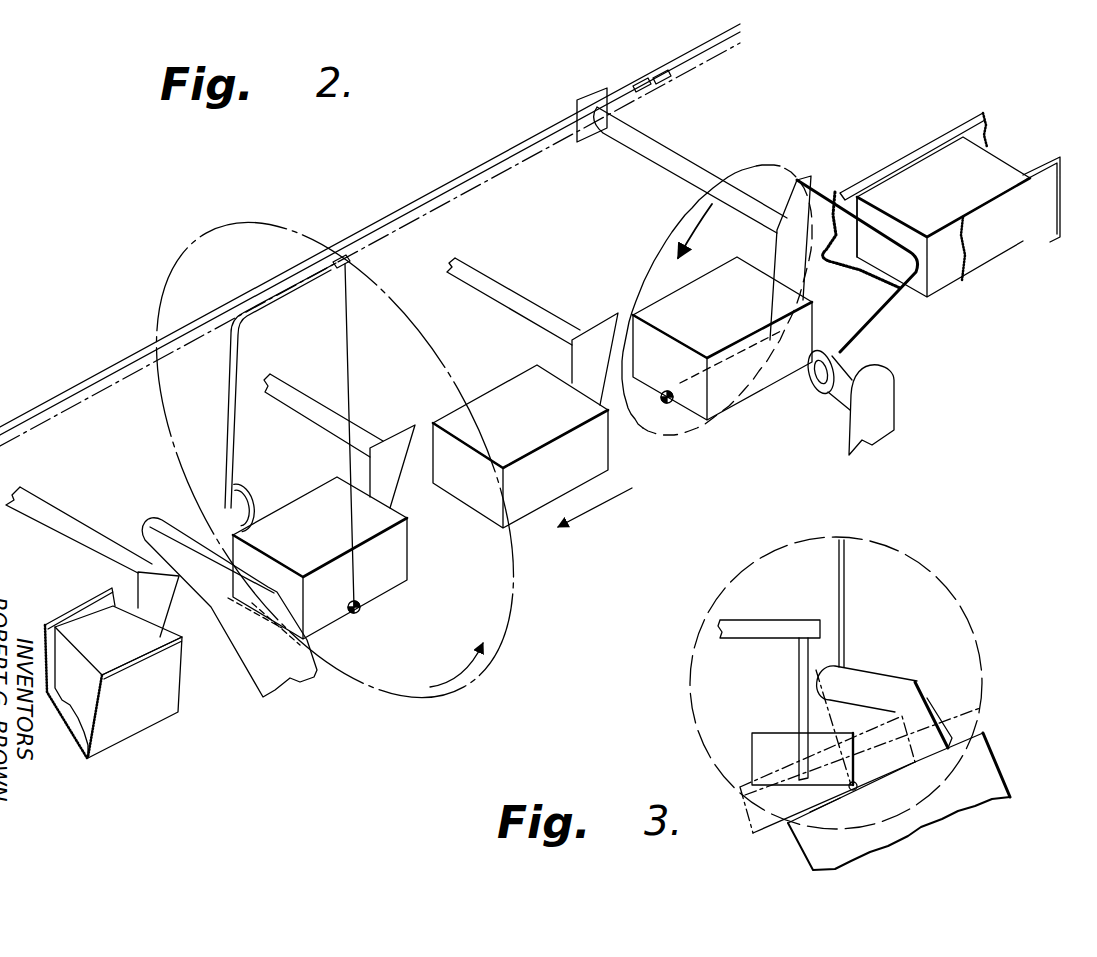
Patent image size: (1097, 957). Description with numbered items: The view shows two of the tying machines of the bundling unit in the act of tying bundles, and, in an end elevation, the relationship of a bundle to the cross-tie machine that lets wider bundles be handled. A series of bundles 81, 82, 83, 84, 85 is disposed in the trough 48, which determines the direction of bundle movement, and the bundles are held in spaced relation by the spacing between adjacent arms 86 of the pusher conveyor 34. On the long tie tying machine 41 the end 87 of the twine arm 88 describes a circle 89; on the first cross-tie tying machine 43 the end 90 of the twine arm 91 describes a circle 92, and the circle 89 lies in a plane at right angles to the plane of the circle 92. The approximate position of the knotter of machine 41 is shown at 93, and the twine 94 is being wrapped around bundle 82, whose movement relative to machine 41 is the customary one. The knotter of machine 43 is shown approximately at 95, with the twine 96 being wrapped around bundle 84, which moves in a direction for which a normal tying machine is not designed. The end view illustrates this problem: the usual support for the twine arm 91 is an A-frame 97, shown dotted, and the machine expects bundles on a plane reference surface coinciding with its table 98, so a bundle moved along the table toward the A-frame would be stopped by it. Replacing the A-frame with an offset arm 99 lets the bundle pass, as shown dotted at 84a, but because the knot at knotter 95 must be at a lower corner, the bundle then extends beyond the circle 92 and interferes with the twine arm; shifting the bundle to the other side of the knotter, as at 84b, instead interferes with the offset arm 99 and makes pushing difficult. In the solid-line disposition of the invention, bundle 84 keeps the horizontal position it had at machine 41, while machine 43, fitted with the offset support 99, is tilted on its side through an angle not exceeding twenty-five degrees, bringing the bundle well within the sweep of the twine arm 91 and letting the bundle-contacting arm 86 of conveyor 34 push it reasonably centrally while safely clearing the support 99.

In FIG. 2, the pusher conveyor 34 is at (679, 148).
In FIG. 3, the pusher conveyor 34 is at (768, 617).
In FIG. 2, the long tie tying machine 41 is at (900, 397).
In FIG. 2, the first cross-tie tying machine 43 is at (267, 663).
In FIG. 3, the first cross-tie tying machine 43 is at (1003, 762).
In FIG. 2, the trough 48 is at (54, 608).
In FIG. 2, the bundle 81 is at (983, 167).
In FIG. 2, the bundle 82 is at (668, 305).
In FIG. 2, the bundle 83 is at (502, 403).
In FIG. 2, the bundle 84 is at (297, 508).
In FIG. 3, the bundle 84 is at (768, 733).
In FIG. 3, the bundle position 84a is at (740, 797).
In FIG. 3, the bundle position 84b is at (985, 712).
In FIG. 2, the bundle 85 is at (83, 621).
In FIG. 2, the arm 86 is at (602, 328).
In FIG. 3, the arm 86 is at (797, 660).
In FIG. 2, the end of twine arm 87 is at (797, 178).
In FIG. 2, the twine arm 88 is at (870, 227).
In FIG. 2, the circle 89 is at (697, 213).
In FIG. 2, the end of twine arm 90 is at (355, 258).
In FIG. 2, the twine arm 91 is at (230, 357).
In FIG. 3, the twine arm 91 is at (847, 580).
In FIG. 2, the circle 92 is at (506, 590).
In FIG. 3, the circle 92 is at (923, 562).
In FIG. 2, the knotter 93 is at (667, 404).
In FIG. 2, the twine 94 is at (777, 261).
In FIG. 2, the knotter 95 is at (357, 613).
In FIG. 3, the knotter 95 is at (857, 788).
In FIG. 2, the twine 96 is at (347, 383).
In FIG. 3, the A-frame 97 is at (893, 687).
In FIG. 3, the table 98 is at (823, 800).
In FIG. 3, the offset arm 99 is at (867, 666).